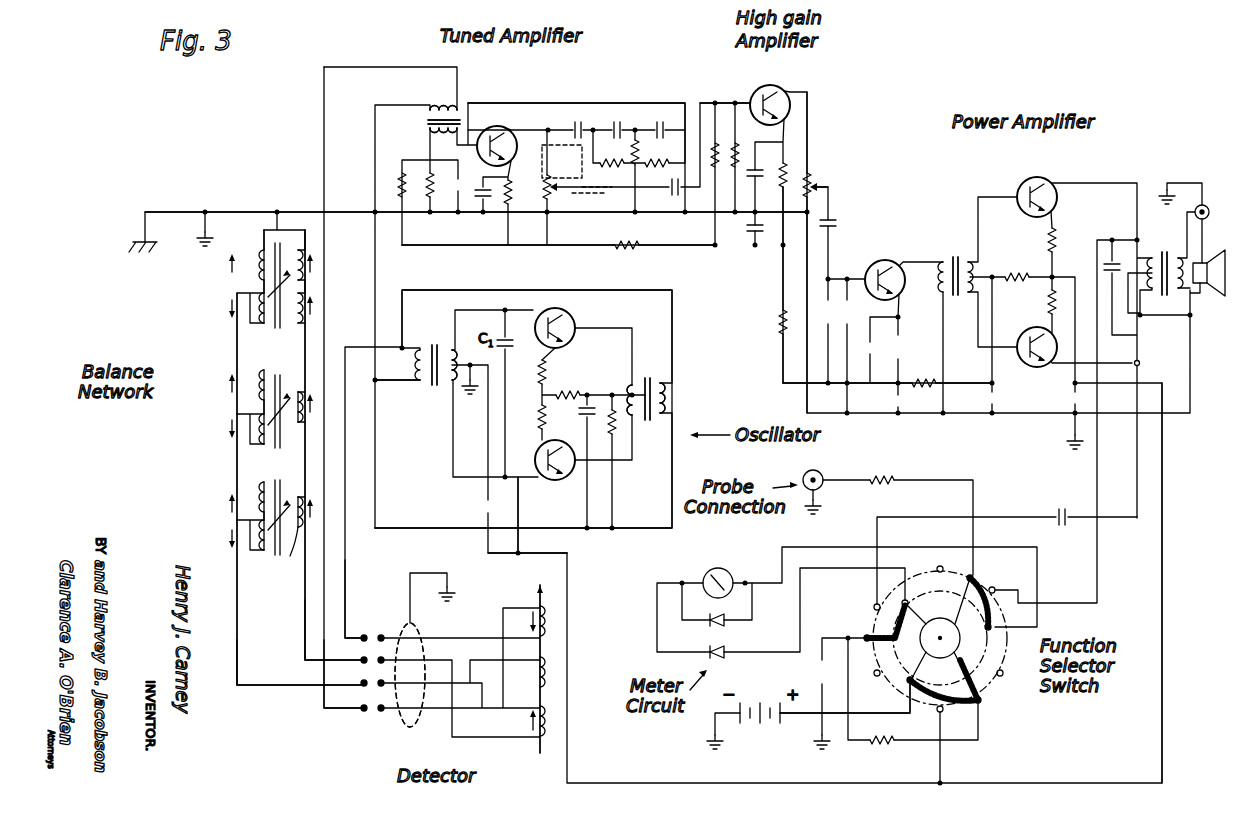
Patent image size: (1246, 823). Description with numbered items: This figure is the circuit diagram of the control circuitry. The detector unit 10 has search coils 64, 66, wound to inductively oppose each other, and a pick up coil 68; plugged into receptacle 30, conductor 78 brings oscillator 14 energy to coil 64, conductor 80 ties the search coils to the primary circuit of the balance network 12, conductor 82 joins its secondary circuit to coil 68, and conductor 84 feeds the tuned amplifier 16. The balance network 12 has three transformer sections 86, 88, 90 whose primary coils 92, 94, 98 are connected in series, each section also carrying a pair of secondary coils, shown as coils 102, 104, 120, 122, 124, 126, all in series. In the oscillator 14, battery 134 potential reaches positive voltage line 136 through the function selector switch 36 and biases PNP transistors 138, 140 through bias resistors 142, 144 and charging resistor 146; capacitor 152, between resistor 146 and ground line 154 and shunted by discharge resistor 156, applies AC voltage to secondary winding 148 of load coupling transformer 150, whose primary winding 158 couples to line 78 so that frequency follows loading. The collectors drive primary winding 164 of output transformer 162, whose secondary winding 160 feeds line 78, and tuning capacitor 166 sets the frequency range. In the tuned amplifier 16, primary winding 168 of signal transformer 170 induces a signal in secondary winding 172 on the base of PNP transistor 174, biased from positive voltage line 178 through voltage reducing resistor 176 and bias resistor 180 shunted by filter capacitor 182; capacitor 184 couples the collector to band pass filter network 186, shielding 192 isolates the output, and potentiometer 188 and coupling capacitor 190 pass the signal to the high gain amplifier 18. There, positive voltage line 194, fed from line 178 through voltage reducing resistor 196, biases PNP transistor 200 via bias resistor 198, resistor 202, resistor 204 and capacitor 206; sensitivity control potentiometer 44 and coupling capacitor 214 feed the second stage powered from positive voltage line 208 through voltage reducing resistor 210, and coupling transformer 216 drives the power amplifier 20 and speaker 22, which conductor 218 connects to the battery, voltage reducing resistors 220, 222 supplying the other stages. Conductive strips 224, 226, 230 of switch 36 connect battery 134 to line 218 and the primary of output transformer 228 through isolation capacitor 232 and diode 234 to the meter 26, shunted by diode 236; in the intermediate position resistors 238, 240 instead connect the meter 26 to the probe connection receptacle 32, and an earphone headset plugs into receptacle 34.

The detector 10 is at (530, 740).
The balance network 12 is at (230, 391).
The oscillator component 14 is at (678, 334).
The tuned amplifier 16 is at (483, 98).
The high gain amplifier 18 is at (830, 104).
The power amplifier 20 is at (1006, 183).
The speaker 22 is at (1214, 304).
The meter 26 is at (722, 561).
The receptacle 30 is at (363, 714).
The probe connection receptacle 32 is at (803, 482).
The plug in connector receptacle 34 is at (1203, 204).
The function selector switch 36 is at (1008, 668).
The sensitivity control potentiometer 44 is at (822, 188).
The search coil 64 is at (548, 618).
The search coil 66 is at (548, 717).
The pick up coil 68 is at (548, 671).
The conductor 78 is at (346, 610).
The conductor 80 is at (305, 631).
The conductor 82 is at (273, 686).
The conductor 84 is at (324, 695).
The transformer section 86 is at (224, 286).
The transformer section 88 is at (224, 426).
The transformer section 90 is at (231, 512).
The coil 92 is at (312, 250).
The coil 94 is at (306, 316).
The primary coil 98 is at (286, 538).
The primary winding 102 is at (261, 263).
The primary winding 104 is at (262, 312).
The primary winding 120 is at (262, 374).
The primary winding 122 is at (264, 444).
The primary winding 124 is at (262, 487).
The primary winding 126 is at (264, 551).
The battery 134 is at (745, 703).
The positive voltage line 136 is at (519, 528).
The PNP transistor 138 is at (573, 313).
The PNP transistor 140 is at (557, 482).
The bias resistor 142 is at (551, 373).
The bias resistor 144 is at (559, 411).
The charging resistor 146 is at (586, 404).
The secondary winding 148 is at (665, 402).
The load coupling transformer 150 is at (647, 350).
The capacitor 152 is at (592, 417).
The ground line 154 is at (167, 212).
The discharge resistor 156 is at (616, 431).
The primary winding 158 is at (666, 388).
The secondary winding 160 is at (378, 382).
The output transformer 162 is at (433, 343).
The primary winding 164 is at (448, 383).
The tuning capacitor 166 is at (510, 337).
The primary winding 168 is at (446, 106).
The signal transformer 170 is at (418, 122).
The secondary winding 172 is at (436, 132).
The PNP transistor 174 is at (506, 124).
The voltage reducing resistor 176 is at (400, 186).
The positive voltage line 178 is at (480, 248).
The bias resistor 180 is at (511, 248).
The filter capacitor 182 is at (487, 211).
The capacitor 184 is at (576, 121).
The band pass filter network 186 is at (613, 123).
The potentiometer 188 is at (553, 197).
The coupling capacitor 190 is at (684, 216).
The shielding 192 is at (613, 210).
The positive voltage line 194 is at (783, 272).
The voltage reducing resistor 196 is at (627, 249).
The bias resistor 198 is at (715, 103).
The PNP transistor 200 is at (768, 85).
The resistor 202 is at (759, 168).
The resistor 204 is at (786, 178).
The capacitor 206 is at (810, 182).
The positive voltage line 208 is at (786, 384).
The voltage reducing resistor 210 is at (781, 318).
The coupling capacitor 214 is at (833, 223).
The coupling transformer 216 is at (948, 258).
The positive voltage line 218 is at (1161, 592).
The voltage reducing resistor 220 is at (924, 384).
The voltage reducing resistor 222 is at (1013, 272).
The conductive strip 224 is at (909, 686).
The conductive strip 226 is at (876, 634).
The output transformer 228 is at (1161, 242).
The conductive strip 230 is at (975, 585).
The isolation capacitor 232 is at (1058, 517).
The diode 234 is at (722, 656).
The diode 236 is at (735, 619).
The resistor 238 is at (878, 749).
The resistor 240 is at (877, 475).